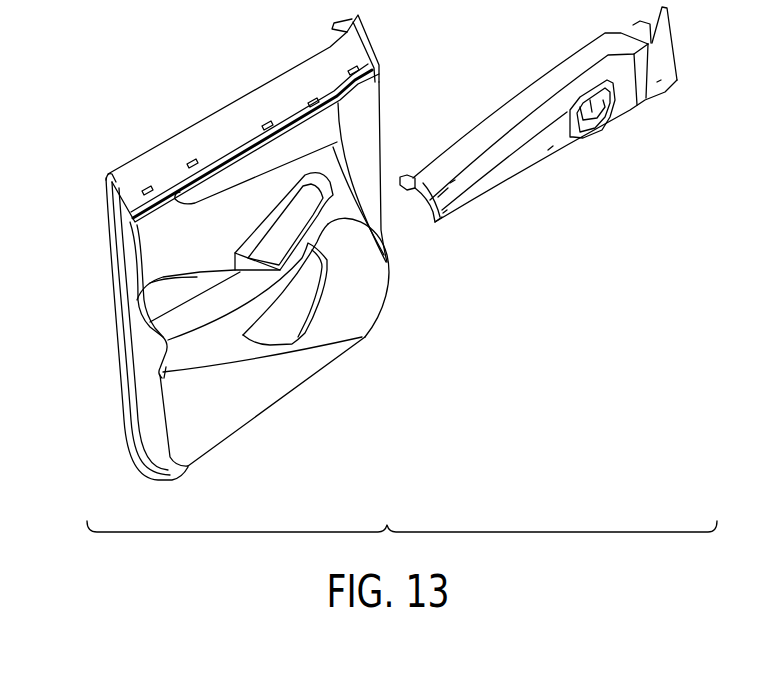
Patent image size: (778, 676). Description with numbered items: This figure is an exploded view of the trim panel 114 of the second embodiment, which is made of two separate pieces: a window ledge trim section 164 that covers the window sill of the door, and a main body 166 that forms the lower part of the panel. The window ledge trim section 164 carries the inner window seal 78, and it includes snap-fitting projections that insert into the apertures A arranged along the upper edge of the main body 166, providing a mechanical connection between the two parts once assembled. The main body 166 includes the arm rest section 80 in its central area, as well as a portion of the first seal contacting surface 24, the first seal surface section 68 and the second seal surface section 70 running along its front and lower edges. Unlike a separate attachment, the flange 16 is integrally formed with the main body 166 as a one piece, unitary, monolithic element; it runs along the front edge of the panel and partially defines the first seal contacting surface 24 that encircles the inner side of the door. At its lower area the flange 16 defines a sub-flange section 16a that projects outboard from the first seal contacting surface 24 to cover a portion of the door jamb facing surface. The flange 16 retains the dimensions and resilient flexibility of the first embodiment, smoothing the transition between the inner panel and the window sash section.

The flange 16 is at (115, 187).
The sub-flange section 16a is at (110, 193).
The first seal contacting surface 24 is at (120, 250).
The first seal surface section 68 is at (134, 398).
The second seal surface section 70 is at (175, 472).
The inner window seal 78 is at (360, 123).
The arm rest section 80 is at (207, 323).
The trim panel 114 is at (402, 541).
The window ledge trim section 164 is at (523, 150).
The main body 166 is at (358, 296).
The apertures A is at (192, 160).